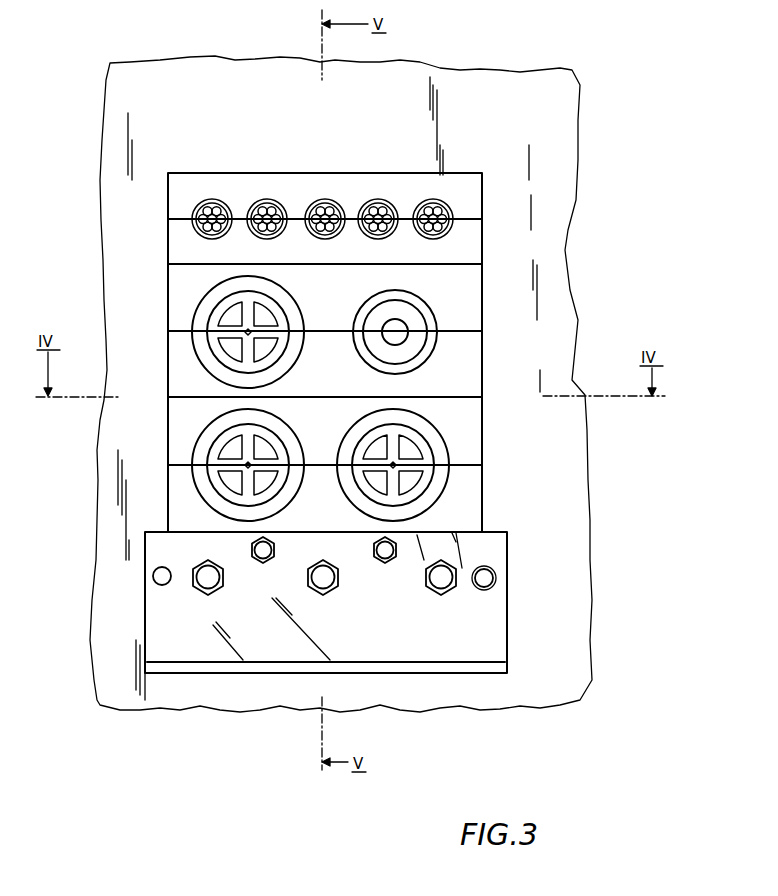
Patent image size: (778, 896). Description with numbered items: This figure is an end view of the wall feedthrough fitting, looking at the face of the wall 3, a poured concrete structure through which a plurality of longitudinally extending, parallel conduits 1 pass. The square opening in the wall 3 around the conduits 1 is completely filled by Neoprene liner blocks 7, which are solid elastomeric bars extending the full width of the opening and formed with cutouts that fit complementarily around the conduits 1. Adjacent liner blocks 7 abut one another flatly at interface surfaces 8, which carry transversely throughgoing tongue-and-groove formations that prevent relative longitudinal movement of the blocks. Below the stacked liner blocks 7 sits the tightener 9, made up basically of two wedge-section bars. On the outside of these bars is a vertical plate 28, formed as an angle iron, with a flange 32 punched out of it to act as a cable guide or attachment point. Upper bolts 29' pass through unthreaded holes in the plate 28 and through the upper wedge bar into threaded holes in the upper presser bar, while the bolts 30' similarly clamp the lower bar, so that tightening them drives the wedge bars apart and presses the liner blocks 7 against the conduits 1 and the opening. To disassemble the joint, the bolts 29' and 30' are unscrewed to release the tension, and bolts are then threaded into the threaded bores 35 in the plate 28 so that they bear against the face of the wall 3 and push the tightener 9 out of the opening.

The conduit 1 is at (260, 204).
The wall 3 is at (572, 655).
The liner block 7 is at (358, 200).
The interface surface 8 is at (349, 340).
The tightener 9 is at (520, 554).
The vertical plate 28 is at (394, 640).
The upper bolt 29' is at (327, 592).
The bolt 30' is at (326, 568).
The flange 32 is at (453, 672).
The threaded bore 35 is at (165, 586).